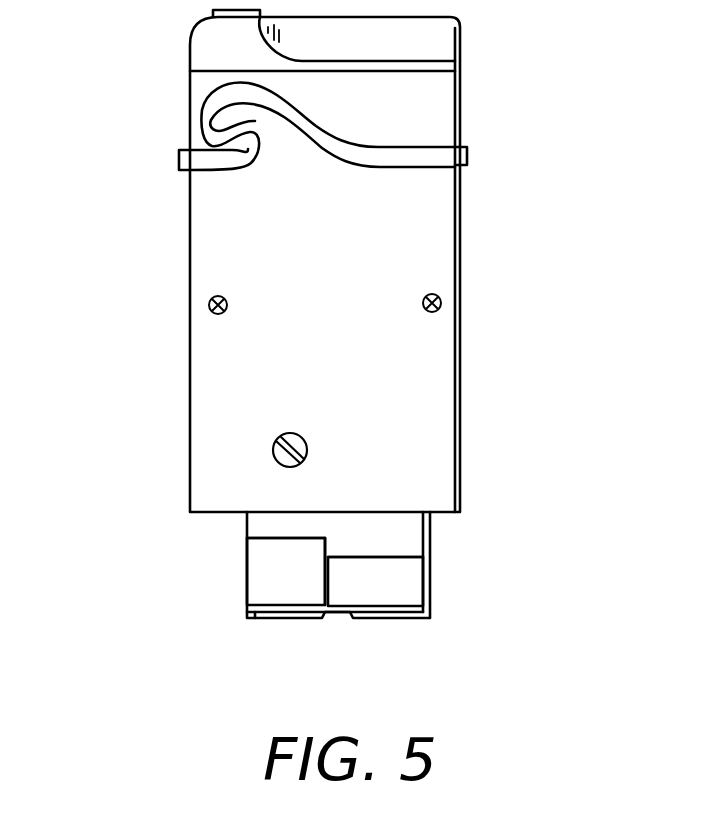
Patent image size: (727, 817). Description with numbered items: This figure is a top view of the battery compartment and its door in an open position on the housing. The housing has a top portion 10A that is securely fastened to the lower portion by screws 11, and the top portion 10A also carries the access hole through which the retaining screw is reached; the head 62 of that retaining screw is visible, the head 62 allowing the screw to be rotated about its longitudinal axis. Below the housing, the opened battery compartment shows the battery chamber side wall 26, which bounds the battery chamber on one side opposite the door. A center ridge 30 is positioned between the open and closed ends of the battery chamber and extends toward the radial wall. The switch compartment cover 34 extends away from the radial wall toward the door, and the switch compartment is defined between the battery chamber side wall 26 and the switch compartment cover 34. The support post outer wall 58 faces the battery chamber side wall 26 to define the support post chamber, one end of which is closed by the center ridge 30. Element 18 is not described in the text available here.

The top portion 10A is at (433, 423).
The screws 11 is at (422, 305).
The head 62 is at (280, 432).
The base 18 is at (380, 617).
The support post outer wall 58 is at (257, 525).
The center ridge 30 is at (323, 568).
The battery chamber side wall 26 is at (273, 597).
The switch compartment cover 34 is at (405, 538).